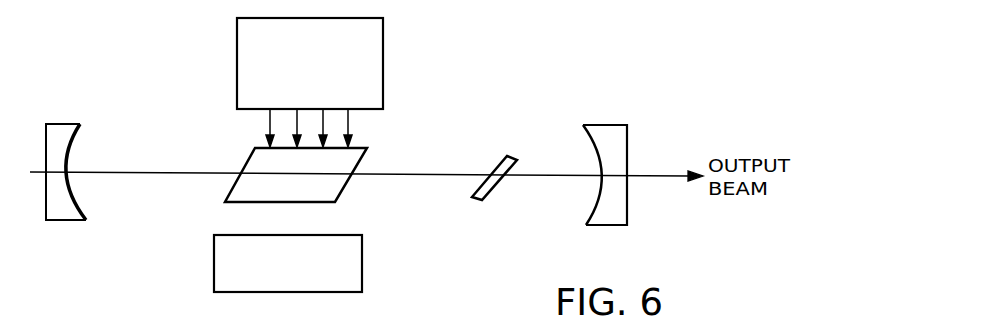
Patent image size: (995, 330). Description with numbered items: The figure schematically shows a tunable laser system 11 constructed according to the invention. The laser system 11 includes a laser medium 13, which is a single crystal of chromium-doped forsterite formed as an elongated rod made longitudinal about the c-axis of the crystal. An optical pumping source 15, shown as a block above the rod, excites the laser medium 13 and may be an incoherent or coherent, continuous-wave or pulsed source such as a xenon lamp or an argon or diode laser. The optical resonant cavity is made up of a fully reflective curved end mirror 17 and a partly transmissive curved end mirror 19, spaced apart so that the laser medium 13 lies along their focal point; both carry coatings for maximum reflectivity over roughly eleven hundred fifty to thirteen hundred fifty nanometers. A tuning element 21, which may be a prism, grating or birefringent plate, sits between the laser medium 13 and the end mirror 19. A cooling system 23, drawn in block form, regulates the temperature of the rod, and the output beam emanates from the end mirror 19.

The laser system 11 is at (172, 280).
The laser medium 13 is at (358, 160).
The optical pumping source 15 is at (383, 84).
The curved end mirror 17 is at (83, 132).
The curved end mirror 19 is at (594, 125).
The tuning element 21 is at (516, 156).
The cooling system 23 is at (362, 264).